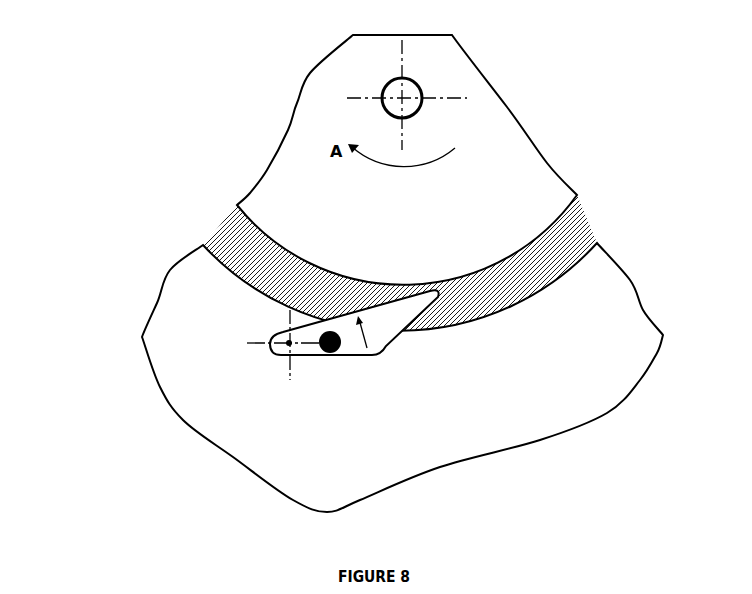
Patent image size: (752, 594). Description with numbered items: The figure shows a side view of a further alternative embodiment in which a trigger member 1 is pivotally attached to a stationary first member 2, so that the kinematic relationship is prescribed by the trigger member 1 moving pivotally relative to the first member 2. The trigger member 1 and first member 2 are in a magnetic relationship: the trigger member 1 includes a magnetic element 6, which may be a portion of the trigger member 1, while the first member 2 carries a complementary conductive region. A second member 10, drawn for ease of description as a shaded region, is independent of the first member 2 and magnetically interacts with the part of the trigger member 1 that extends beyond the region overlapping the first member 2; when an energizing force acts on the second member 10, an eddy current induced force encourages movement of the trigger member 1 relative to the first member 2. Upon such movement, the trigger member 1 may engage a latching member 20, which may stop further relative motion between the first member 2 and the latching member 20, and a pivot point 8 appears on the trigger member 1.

The latching member 20 is at (376, 89).
The second member 10 is at (245, 238).
The first member 2 is at (188, 313).
The pin 8 is at (287, 345).
The magnetic element 6 is at (322, 356).
The trigger member 1 is at (392, 346).